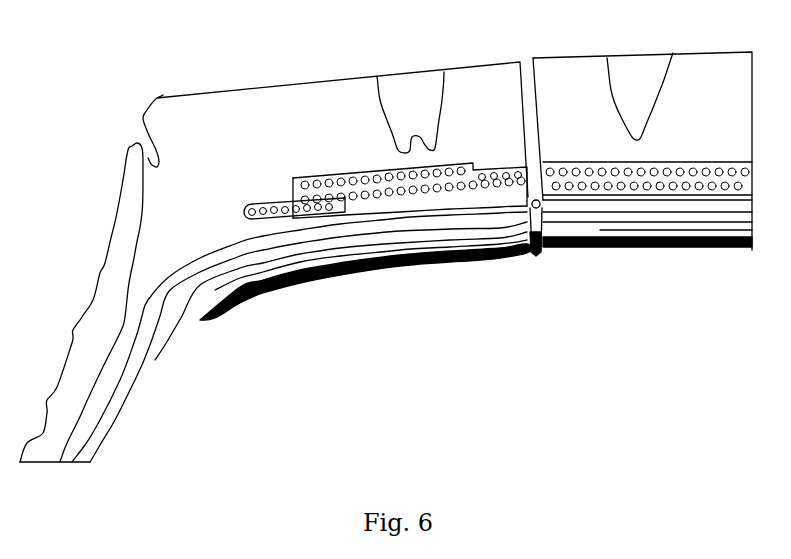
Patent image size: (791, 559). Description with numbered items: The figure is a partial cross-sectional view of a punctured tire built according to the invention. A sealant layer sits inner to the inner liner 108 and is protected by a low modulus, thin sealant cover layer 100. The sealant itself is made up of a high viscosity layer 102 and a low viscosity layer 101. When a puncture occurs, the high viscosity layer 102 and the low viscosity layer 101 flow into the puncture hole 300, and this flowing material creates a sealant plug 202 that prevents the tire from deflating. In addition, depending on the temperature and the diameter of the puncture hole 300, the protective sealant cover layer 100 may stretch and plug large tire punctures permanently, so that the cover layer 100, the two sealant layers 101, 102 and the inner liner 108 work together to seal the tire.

The sealant cover layer 100 is at (712, 250).
The low viscosity layer 101 is at (340, 212).
The high viscosity layer 102 is at (668, 227).
The inner liner 108 is at (368, 260).
The sealant plug 202 is at (526, 190).
The puncture hole 300 is at (537, 80).